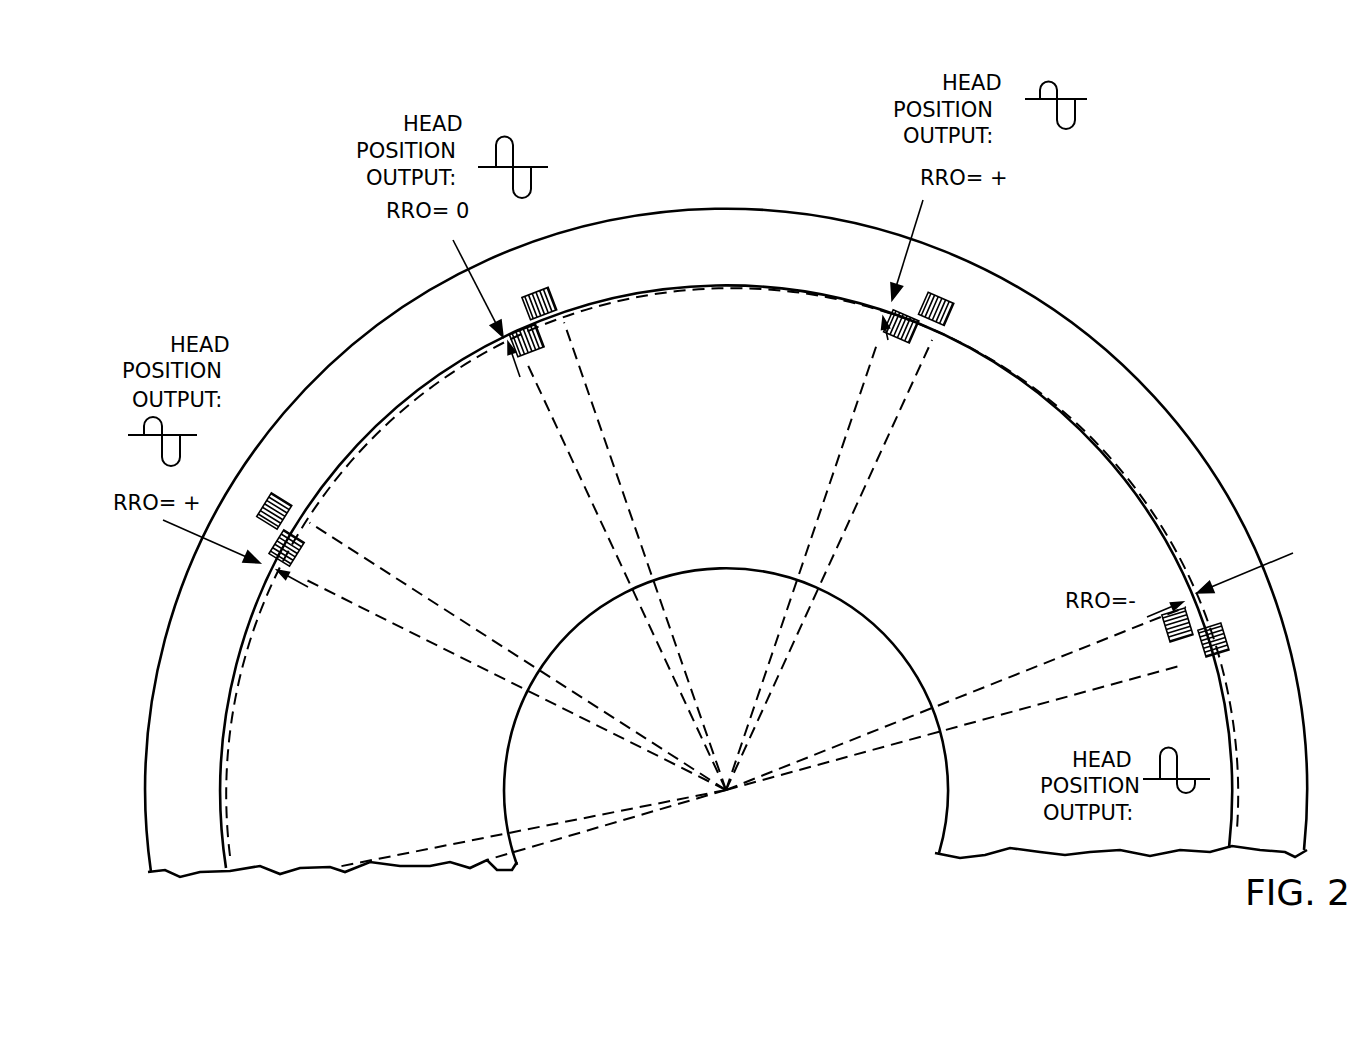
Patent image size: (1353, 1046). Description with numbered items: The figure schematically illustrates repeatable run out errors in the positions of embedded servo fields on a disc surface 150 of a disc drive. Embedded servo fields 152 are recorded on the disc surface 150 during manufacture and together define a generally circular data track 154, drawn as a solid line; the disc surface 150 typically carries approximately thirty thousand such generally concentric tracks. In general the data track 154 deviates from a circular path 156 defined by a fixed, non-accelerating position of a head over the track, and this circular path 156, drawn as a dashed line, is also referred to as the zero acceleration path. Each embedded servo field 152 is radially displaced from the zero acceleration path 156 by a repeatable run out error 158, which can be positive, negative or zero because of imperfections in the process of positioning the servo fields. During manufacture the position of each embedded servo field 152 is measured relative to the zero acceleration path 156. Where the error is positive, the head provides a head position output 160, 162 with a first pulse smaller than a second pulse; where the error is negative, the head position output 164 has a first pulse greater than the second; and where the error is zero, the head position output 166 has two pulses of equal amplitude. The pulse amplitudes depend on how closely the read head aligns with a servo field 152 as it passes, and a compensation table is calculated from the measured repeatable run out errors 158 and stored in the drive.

The disc surface 150 is at (538, 620).
The embedded servo field 152 is at (543, 352).
The data track 154 is at (784, 281).
The zero acceleration path 156 is at (780, 290).
The repeatable run out error 158 is at (458, 252).
The head position output 160 is at (134, 415).
The head position output 162 is at (1110, 118).
The head position output 164 is at (1180, 819).
The head position output 166 is at (580, 145).